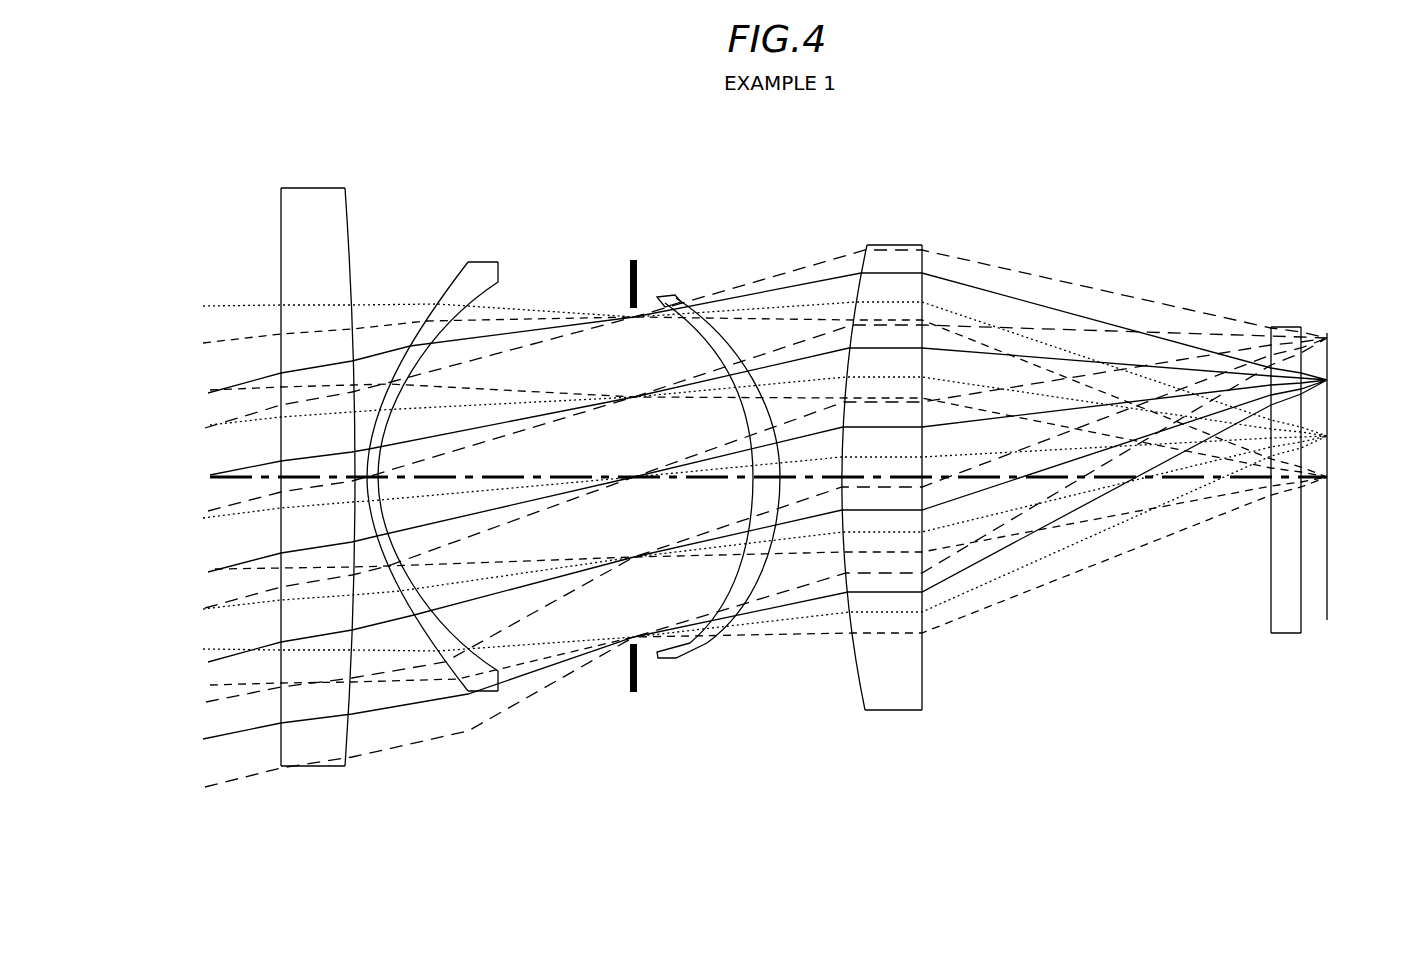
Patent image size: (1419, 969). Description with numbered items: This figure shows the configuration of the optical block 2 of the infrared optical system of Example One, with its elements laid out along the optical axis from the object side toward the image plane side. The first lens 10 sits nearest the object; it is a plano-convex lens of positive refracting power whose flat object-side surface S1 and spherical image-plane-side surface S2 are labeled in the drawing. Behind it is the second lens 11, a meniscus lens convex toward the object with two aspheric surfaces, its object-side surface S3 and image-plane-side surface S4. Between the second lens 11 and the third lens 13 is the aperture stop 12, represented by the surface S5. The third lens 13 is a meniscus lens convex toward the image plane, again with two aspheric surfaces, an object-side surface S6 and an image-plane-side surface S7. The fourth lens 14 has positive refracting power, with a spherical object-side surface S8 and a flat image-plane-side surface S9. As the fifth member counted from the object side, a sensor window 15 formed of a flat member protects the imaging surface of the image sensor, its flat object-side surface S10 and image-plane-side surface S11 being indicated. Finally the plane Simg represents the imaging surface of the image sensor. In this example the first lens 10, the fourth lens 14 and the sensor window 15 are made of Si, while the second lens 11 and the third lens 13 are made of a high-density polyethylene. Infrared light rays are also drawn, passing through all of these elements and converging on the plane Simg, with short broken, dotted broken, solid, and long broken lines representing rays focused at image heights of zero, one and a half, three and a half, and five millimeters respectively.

The optical block 2 is at (1118, 834).
The first lens 10 is at (313, 489).
The second lens 11 is at (439, 461).
The aperture stop 12 is at (590, 446).
The third lens 13 is at (711, 430).
The fourth lens 14 is at (889, 456).
The sensor window 15 is at (1256, 437).
The surface S1 is at (283, 172).
The surface S2 is at (345, 172).
The surface S3 is at (465, 246).
The surface S4 is at (498, 246).
The surface S5 is at (634, 244).
The surface S6 is at (656, 279).
The surface S7 is at (683, 279).
The surface S8 is at (868, 229).
The surface S9 is at (922, 229).
The surface S10 is at (1273, 311).
The surface S11 is at (1303, 311).
The plane Simg is at (1327, 598).